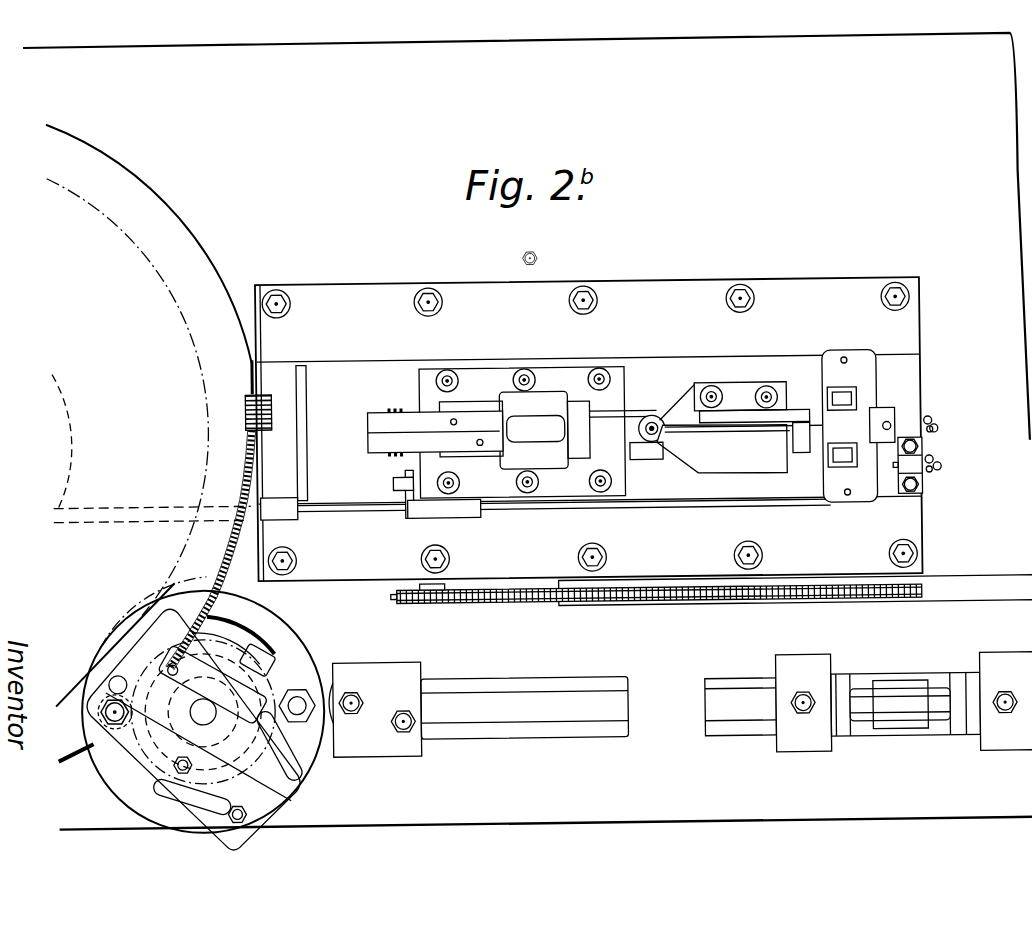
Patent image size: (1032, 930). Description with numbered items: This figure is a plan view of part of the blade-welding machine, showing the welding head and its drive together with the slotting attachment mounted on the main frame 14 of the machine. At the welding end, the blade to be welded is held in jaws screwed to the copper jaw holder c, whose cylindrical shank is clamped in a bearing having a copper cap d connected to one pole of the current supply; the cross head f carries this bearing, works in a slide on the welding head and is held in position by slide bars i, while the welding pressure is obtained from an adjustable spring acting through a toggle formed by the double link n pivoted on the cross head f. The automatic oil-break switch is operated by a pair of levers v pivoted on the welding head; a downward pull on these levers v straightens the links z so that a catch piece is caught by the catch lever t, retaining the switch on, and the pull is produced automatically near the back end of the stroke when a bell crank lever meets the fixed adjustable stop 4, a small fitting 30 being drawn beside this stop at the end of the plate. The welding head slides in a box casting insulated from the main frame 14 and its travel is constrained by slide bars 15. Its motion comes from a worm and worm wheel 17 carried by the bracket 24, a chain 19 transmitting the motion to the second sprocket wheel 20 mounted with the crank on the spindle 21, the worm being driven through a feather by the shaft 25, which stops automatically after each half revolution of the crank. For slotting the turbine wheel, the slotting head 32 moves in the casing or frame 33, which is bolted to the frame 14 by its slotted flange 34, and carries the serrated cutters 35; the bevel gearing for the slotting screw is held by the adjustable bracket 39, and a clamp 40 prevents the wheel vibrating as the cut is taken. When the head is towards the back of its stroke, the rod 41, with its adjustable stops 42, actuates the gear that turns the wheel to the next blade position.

The main frame 14 is at (527, 431).
The slide bars 15 is at (589, 429).
The fixed adjustable stop 4 is at (937, 409).
The bracket 30 is at (928, 463).
The adjustable stops 42 is at (278, 505).
The rod 41 is at (345, 507).
The chain 19 is at (714, 603).
The second sprocket wheel 20 is at (392, 596).
The spindle 21 is at (428, 602).
The bracket 39 is at (412, 690).
The shaft 25 is at (516, 718).
The casing or frame 33 is at (378, 724).
The bracket 24 is at (805, 740).
The worm wheel 17 is at (902, 722).
The slotting head 32 is at (201, 730).
The slotted flange 34 is at (125, 782).
The serrated cutters 35 is at (172, 664).
The clamp 40 is at (113, 680).
The copper jaw holder c is at (386, 418).
The copper cap d is at (556, 400).
The slide bars i is at (497, 442).
The cross head f is at (628, 420).
The disc u is at (656, 422).
The catch lever t is at (764, 449).
The double link n is at (646, 462).
The links z is at (801, 442).
The levers v is at (890, 424).